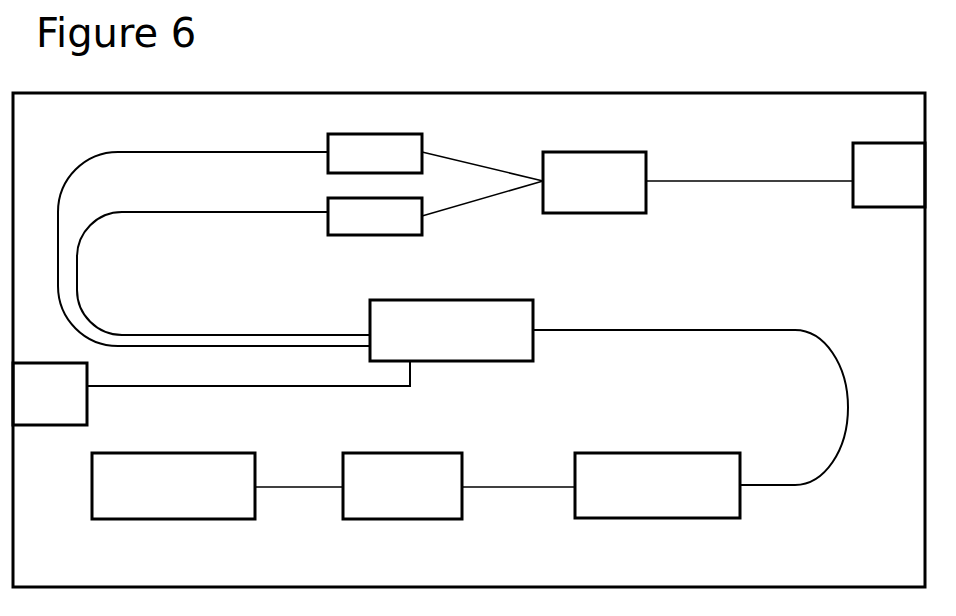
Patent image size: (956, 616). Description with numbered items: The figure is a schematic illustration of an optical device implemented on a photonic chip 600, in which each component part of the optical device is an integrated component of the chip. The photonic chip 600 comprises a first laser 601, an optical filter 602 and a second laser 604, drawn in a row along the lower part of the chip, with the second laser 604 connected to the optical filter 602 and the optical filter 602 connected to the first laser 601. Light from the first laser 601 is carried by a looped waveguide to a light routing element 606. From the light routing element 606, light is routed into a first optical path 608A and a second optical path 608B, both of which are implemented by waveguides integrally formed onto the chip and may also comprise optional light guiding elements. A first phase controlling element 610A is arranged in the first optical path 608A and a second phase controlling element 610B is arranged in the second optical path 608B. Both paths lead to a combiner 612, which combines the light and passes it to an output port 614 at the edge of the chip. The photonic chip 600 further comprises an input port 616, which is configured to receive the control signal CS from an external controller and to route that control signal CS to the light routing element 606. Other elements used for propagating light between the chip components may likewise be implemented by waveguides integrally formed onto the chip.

The photonic chip 600 is at (469, 340).
The first laser 601 is at (657, 485).
The optical filter 602 is at (459, 486).
The second laser 604 is at (217, 486).
The light routing element 606 is at (609, 392).
The first optical path 608A is at (190, 212).
The second optical path 608B is at (170, 152).
The first phase controlling element 610A is at (435, 208).
The second phase controlling element 610B is at (435, 157).
The combiner 612 is at (698, 182).
The output port 614 is at (889, 175).
The input port 616 is at (211, 393).